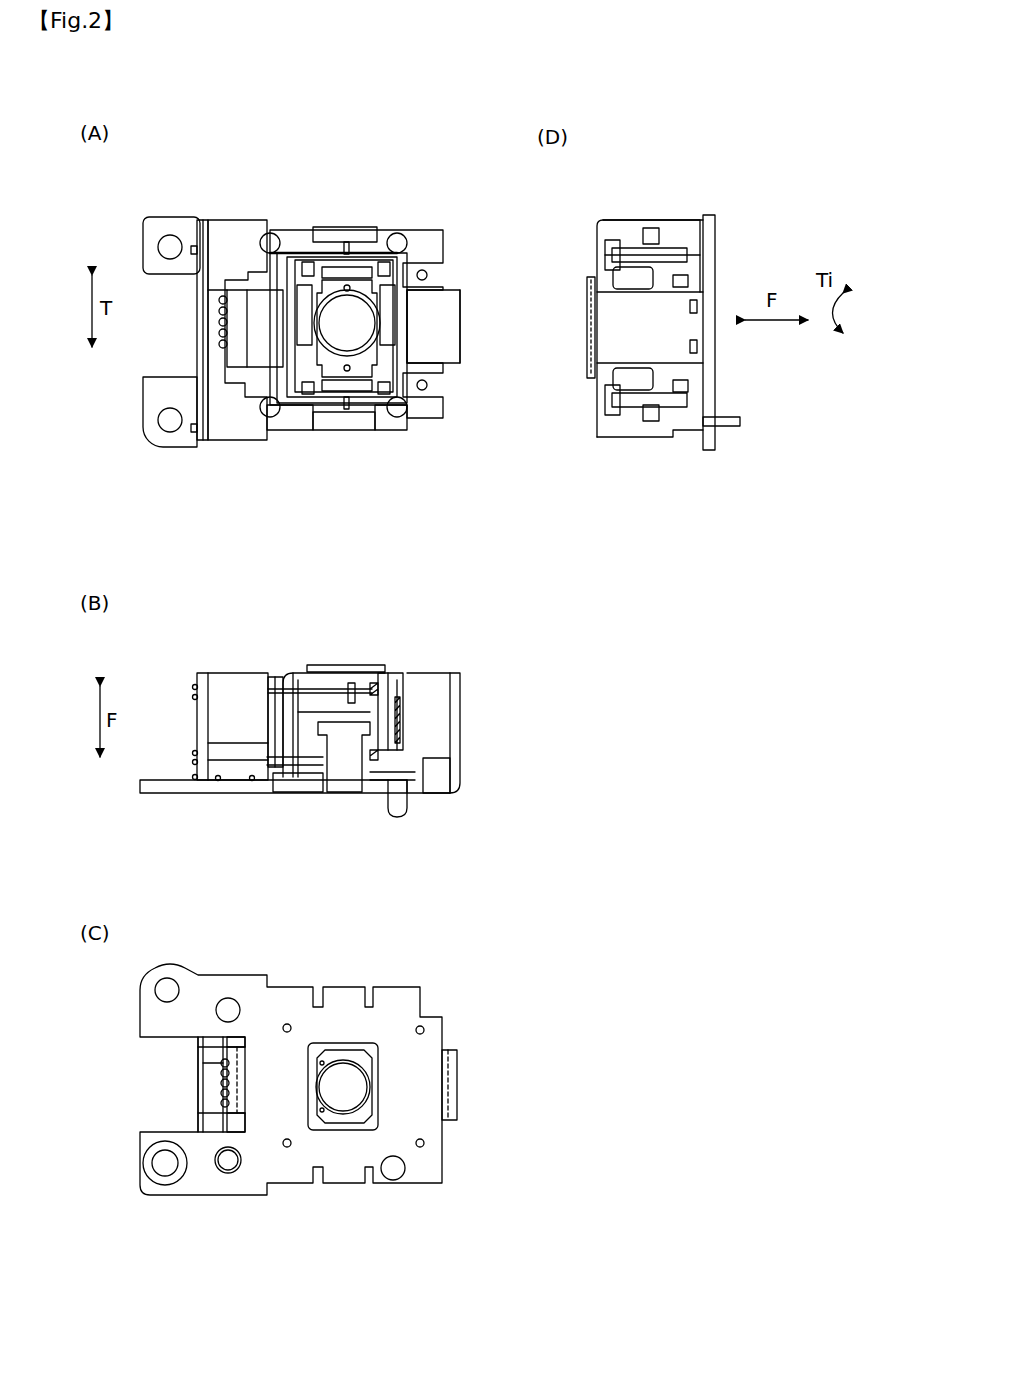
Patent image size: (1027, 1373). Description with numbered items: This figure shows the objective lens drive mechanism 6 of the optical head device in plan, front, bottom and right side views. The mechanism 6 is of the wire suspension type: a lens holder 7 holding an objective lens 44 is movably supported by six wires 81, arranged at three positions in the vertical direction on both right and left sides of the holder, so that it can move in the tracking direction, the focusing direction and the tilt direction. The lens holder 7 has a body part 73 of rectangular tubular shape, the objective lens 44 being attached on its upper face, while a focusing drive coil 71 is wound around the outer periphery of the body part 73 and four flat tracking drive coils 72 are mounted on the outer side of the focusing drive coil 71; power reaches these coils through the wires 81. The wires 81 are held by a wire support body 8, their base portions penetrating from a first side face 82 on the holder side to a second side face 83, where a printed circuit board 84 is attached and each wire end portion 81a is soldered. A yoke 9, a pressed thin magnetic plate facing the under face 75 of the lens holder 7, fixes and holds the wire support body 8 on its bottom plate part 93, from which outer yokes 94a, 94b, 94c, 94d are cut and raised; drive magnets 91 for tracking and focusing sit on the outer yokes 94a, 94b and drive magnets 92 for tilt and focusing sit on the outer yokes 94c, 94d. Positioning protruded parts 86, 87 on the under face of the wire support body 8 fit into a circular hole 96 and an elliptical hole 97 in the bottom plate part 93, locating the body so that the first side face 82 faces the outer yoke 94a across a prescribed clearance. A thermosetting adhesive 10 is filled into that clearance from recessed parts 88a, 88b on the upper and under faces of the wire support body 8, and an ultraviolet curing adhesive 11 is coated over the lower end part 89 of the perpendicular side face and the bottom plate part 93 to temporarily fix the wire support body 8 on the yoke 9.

The objective lens drive mechanism 6 is at (427, 193).
The lens holder 7 is at (382, 258).
The wire support body 8 is at (235, 240).
The yoke 9 is at (166, 437).
The thermosetting adhesive 10 is at (219, 344).
The ultraviolet curing adhesive 11 is at (251, 781).
The objective lens 44 is at (350, 312).
The focusing drive coil 71 is at (648, 257).
The tracking drive coils 72 is at (404, 385).
The body part 73 is at (398, 402).
The under face 75 is at (390, 755).
The wires 81 is at (274, 253).
The end portion 81a is at (192, 250).
The first side face 82 is at (232, 282).
The second side face 83 is at (210, 222).
The printed circuit board 84 is at (196, 222).
The positioning protruded part 86 is at (228, 1004).
The positioning protruded part 87 is at (228, 1163).
The recessed part 88a is at (204, 342).
The recessed part 88b is at (223, 1060).
The lower end part 89 is at (214, 776).
The drive magnets for tracking and focusing 91 is at (432, 320).
The drive magnets for tilt and focusing 92 is at (346, 240).
The bottom plate part 93 is at (306, 425).
The outer yoke 94a is at (204, 340).
The outer yoke 94b is at (458, 330).
The outer yoke 94c is at (362, 230).
The outer yoke 94d is at (331, 431).
The circular hole 96 is at (345, 765).
The elliptical hole 97 is at (241, 1167).